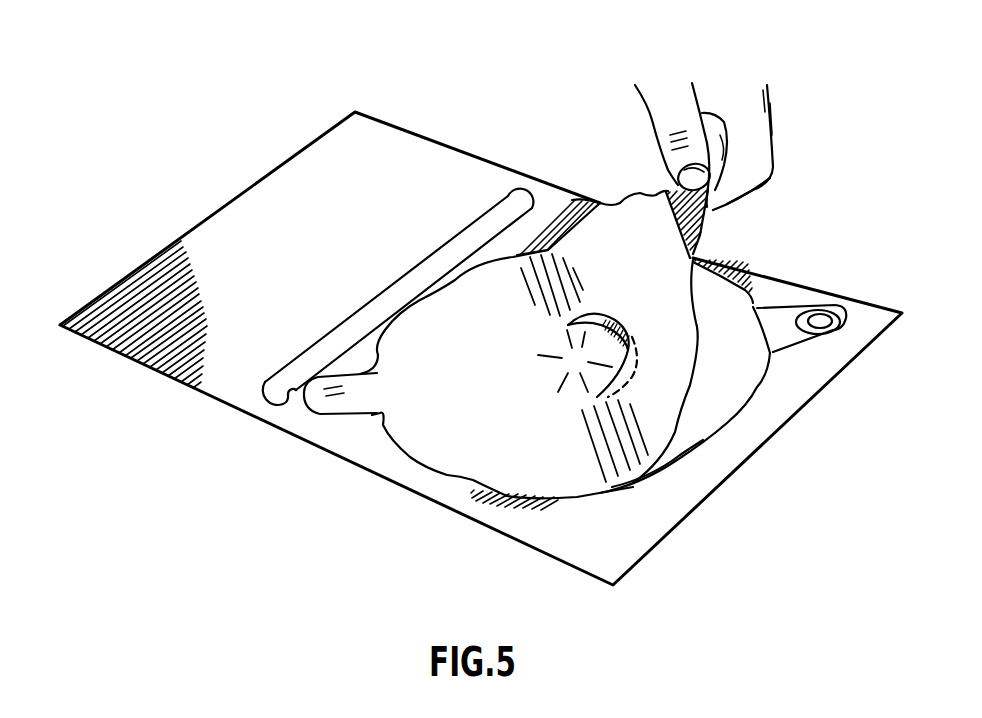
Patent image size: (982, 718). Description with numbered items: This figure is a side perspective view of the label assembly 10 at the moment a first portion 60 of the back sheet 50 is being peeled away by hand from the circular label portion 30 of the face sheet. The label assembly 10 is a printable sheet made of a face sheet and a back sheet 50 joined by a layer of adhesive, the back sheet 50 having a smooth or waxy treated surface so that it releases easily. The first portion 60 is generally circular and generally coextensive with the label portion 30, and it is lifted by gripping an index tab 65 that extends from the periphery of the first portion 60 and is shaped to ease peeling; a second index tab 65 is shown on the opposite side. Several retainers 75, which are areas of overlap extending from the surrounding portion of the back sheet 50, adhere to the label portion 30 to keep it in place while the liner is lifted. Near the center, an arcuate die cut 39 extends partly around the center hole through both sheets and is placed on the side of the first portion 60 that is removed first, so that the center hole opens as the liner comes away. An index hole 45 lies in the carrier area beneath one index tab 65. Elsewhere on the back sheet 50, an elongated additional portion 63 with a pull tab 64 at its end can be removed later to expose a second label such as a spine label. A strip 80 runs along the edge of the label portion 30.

The label assembly 10 is at (228, 154).
The label portion 30 is at (770, 398).
The die cut 39 is at (606, 312).
The index hole 45 is at (820, 322).
The back sheet 50 is at (465, 148).
The first portion 60 is at (630, 485).
The additional portion 63 is at (397, 290).
The pull tab 64 is at (276, 405).
The index tab 65 is at (318, 404).
The retainers 75 is at (752, 305).
The seal strip 80 is at (720, 413).